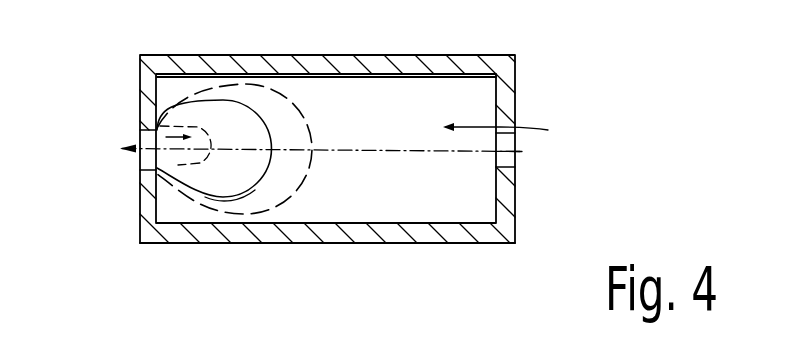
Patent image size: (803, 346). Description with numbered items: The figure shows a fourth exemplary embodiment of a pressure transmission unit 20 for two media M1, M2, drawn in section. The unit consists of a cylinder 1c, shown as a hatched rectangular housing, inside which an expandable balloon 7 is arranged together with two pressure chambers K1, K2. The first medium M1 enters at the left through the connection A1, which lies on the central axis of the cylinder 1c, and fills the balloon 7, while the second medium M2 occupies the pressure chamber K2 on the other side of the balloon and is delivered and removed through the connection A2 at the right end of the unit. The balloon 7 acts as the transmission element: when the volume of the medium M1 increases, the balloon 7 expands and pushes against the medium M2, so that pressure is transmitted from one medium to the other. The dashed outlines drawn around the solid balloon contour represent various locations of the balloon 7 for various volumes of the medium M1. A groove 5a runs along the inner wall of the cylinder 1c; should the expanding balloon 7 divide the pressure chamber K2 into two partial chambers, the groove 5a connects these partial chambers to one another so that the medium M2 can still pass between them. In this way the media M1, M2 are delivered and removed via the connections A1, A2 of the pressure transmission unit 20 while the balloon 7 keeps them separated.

The pressure transmission unit 20 is at (140, 97).
The groove 5a is at (225, 76).
The cylinder 1c is at (333, 233).
The expandable balloon 7 is at (230, 199).
The connection A1 is at (133, 153).
The connection A2 is at (517, 153).
The pressure chamber K1 is at (157, 138).
The pressure chamber K2 is at (515, 132).
The medium M1 is at (202, 152).
The medium M2 is at (368, 128).